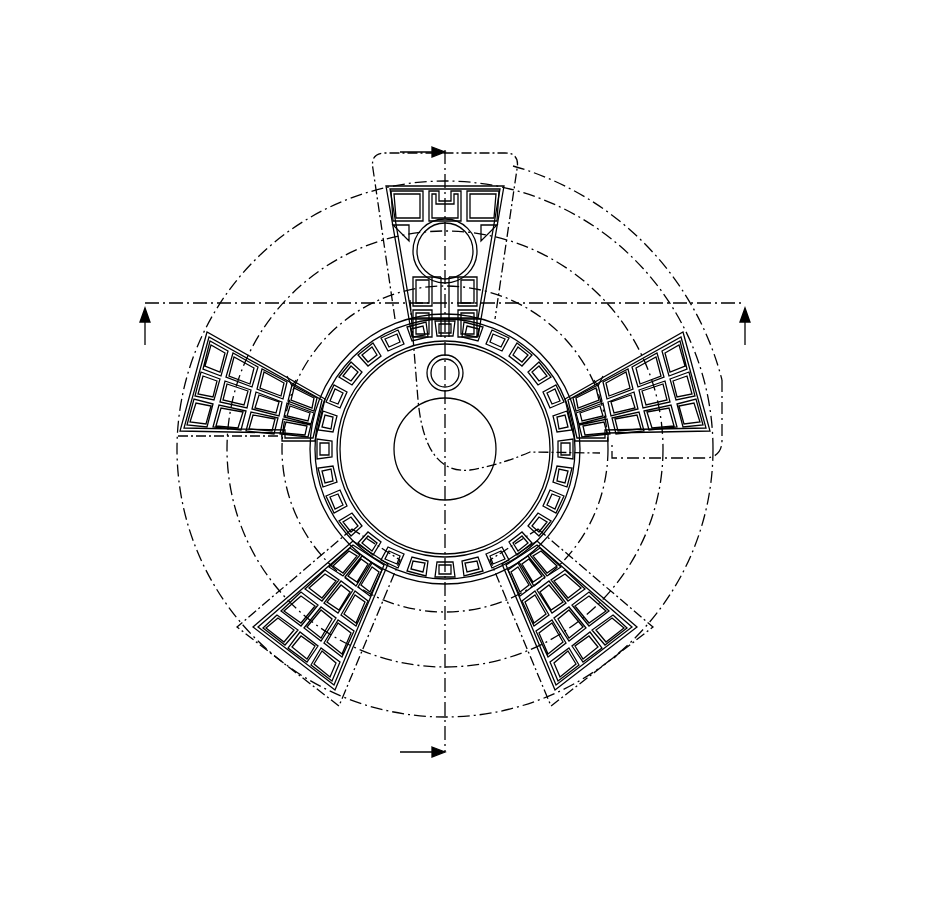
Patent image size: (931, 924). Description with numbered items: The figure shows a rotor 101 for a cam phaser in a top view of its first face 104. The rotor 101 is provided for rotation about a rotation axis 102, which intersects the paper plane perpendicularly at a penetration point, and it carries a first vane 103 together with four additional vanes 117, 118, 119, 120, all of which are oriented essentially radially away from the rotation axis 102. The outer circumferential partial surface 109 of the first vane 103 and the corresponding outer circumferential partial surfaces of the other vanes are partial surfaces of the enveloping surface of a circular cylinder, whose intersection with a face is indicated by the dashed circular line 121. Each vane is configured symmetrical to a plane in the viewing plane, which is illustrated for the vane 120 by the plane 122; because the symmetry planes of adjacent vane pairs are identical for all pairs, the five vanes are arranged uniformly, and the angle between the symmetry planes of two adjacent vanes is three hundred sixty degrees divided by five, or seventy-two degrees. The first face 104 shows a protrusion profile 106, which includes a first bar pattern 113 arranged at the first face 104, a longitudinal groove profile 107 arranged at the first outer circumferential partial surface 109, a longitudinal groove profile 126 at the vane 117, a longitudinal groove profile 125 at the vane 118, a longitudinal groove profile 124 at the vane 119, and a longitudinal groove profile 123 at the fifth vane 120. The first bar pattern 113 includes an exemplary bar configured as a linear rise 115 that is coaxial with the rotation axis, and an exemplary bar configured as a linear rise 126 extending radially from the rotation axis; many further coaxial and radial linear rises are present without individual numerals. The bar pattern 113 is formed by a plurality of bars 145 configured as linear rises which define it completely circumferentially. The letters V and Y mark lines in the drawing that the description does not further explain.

The rotor 101 is at (212, 110).
The rotation axis 102 is at (445, 449).
The first vane 103 is at (285, 667).
The first face 104 is at (572, 493).
The protrusion profile 106 is at (572, 456).
The longitudinal groove profile 107 is at (315, 682).
The outer circumferential partial surface 109 is at (277, 660).
The first bar pattern 113 is at (330, 620).
The linear rise 115 is at (603, 352).
The vane 117 is at (587, 663).
The vane 118 is at (707, 400).
The vane 119 is at (443, 187).
The vane 120 is at (227, 410).
The dashed circular line 121 is at (682, 582).
The plane 122 is at (193, 380).
The longitudinal groove profile 123 is at (178, 410).
The longitudinal groove profile 124 is at (482, 186).
The longitudinal groove profile 125 is at (712, 433).
The longitudinal groove profile 126 is at (600, 383).
The bars 145 is at (395, 583).
The envelope V is at (530, 168).
The outer envelope Y is at (520, 233).